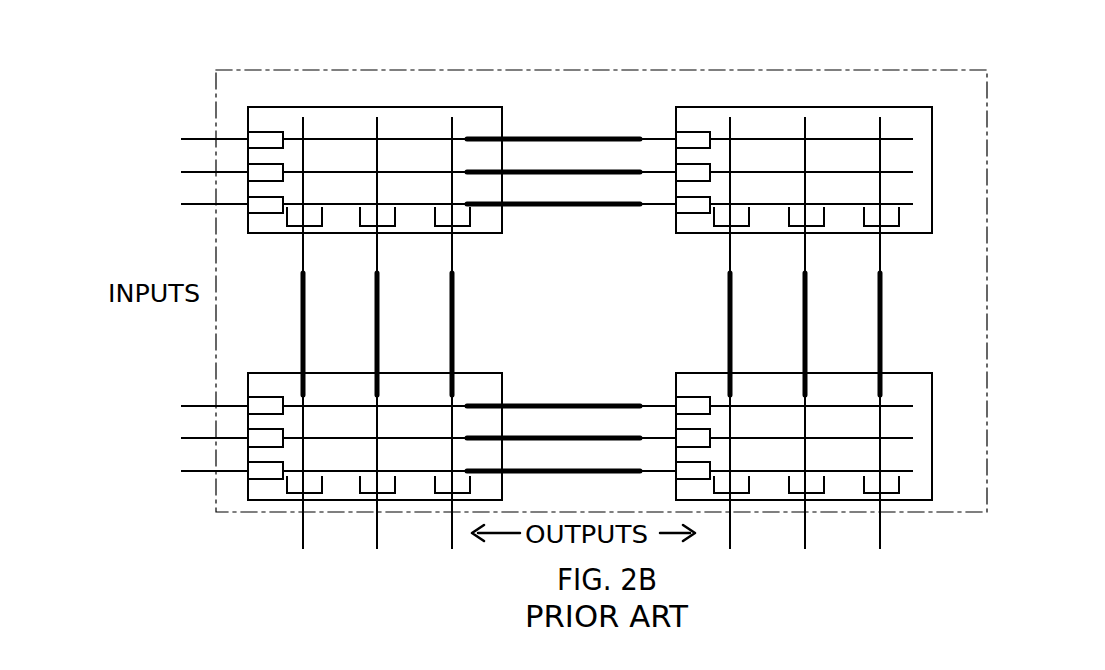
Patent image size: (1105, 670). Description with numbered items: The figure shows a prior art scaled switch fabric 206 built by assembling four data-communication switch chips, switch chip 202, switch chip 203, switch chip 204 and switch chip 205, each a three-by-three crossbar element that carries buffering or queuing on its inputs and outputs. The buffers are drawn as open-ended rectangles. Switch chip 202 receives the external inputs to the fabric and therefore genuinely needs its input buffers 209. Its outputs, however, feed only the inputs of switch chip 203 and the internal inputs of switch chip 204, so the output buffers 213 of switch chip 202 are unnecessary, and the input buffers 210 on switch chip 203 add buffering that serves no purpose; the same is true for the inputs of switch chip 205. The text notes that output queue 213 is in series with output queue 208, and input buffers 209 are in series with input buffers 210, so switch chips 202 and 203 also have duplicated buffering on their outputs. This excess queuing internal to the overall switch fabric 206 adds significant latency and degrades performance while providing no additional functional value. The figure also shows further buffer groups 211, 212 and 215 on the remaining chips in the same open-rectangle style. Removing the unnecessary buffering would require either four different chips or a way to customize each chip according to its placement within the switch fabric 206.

The switch chip 202 is at (468, 102).
The switch chip 203 is at (883, 103).
The switch chip 204 is at (248, 372).
The switch chip 205 is at (935, 398).
The switch fabric 206 is at (987, 183).
The output queue 208 is at (383, 490).
The input buffers 209 is at (262, 130).
The input buffers 210 is at (697, 125).
The output terminals of fourth switch block 211 is at (905, 484).
The output terminals of second switch block 212 is at (912, 218).
The output buffers 213 is at (472, 217).
The input terminals of third switch block 215 is at (265, 485).